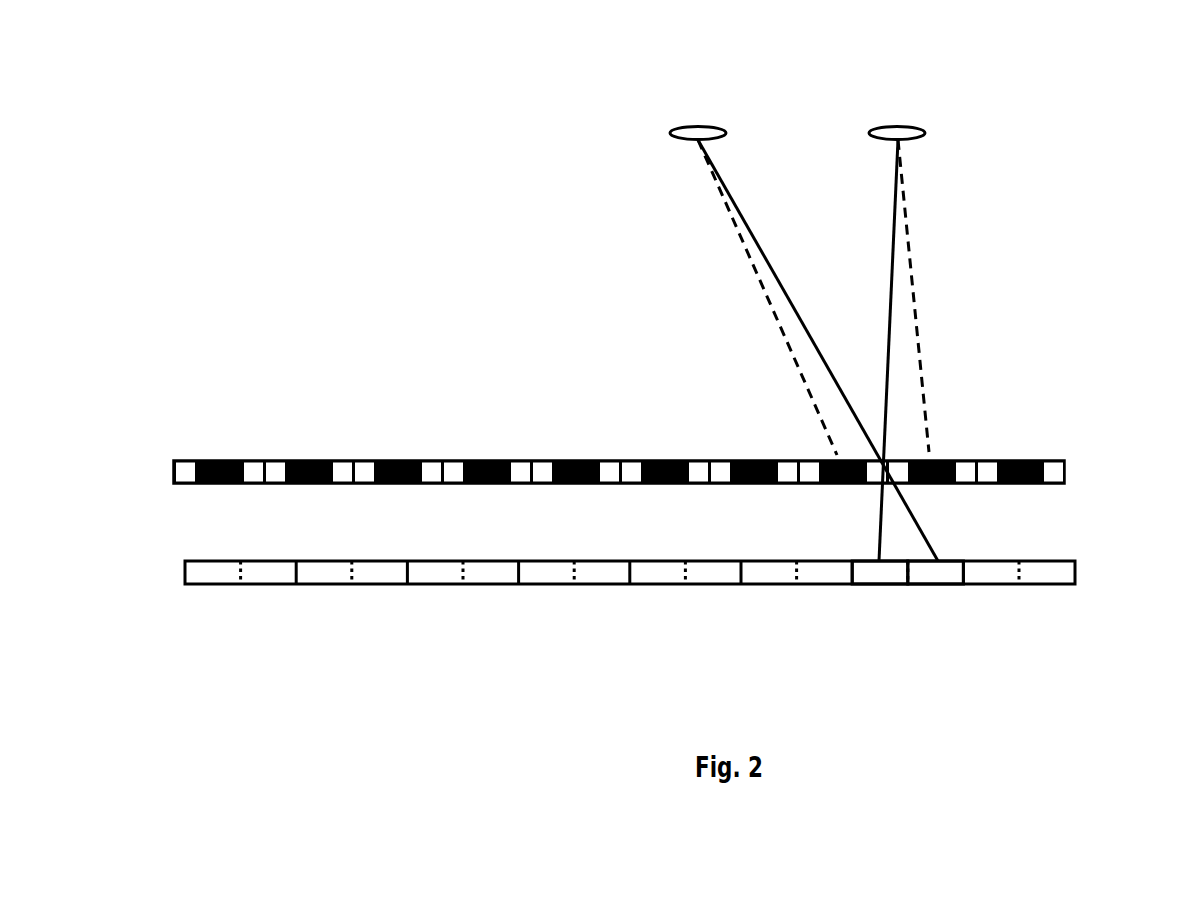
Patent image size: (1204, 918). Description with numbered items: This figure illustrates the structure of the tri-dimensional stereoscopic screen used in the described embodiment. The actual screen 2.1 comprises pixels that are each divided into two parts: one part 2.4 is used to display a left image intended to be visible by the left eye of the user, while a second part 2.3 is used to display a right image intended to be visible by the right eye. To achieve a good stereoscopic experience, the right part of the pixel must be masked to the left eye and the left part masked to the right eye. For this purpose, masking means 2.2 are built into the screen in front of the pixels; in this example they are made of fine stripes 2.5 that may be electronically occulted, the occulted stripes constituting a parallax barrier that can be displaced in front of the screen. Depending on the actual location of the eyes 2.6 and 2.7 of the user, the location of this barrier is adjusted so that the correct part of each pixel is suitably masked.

The actual screen 2.1 is at (1075, 572).
The masking means 2.2 is at (1067, 470).
The second part of pixel 2.3 is at (942, 573).
The first part of pixel 2.4 is at (878, 573).
The fine stripes 2.5 is at (920, 458).
The eye 2.6 is at (897, 127).
The eye 2.7 is at (697, 127).